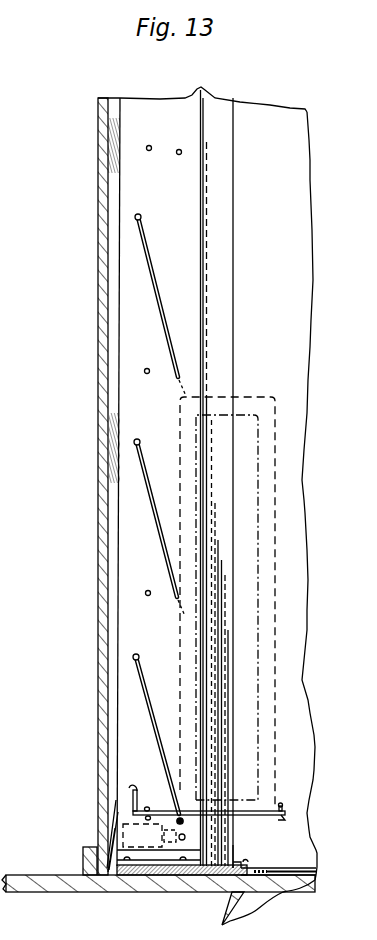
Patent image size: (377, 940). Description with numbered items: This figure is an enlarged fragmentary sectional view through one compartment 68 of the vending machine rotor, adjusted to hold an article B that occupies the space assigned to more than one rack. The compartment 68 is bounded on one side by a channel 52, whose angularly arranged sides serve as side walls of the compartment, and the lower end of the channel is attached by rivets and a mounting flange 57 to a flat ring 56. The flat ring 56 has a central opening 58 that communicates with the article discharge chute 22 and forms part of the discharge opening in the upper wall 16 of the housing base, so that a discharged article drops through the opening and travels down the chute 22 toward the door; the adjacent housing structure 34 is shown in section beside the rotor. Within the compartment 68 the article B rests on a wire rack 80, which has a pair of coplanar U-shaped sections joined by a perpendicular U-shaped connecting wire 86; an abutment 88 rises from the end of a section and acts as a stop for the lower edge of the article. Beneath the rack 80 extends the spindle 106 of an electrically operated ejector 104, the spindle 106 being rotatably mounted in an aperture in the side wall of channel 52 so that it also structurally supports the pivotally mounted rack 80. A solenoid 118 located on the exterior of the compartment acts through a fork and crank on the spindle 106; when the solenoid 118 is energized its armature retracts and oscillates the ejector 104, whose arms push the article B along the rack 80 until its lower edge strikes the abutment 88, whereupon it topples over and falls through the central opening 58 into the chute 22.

The upper wall 16 is at (45, 888).
The article discharge chute 22 is at (264, 891).
The side wall 34 is at (100, 698).
The channel 52 is at (128, 607).
The flat ring 56 is at (84, 850).
The mounting flange 57 is at (175, 853).
The central opening 58 is at (277, 865).
The compartment 68 is at (59, 822).
The wire rack 80 is at (244, 820).
The connecting wire 86 is at (135, 786).
The abutment 88 is at (281, 803).
The ejector 104 is at (153, 708).
The spindle 106 is at (182, 817).
The solenoid 118 is at (96, 822).
The article B is at (262, 720).